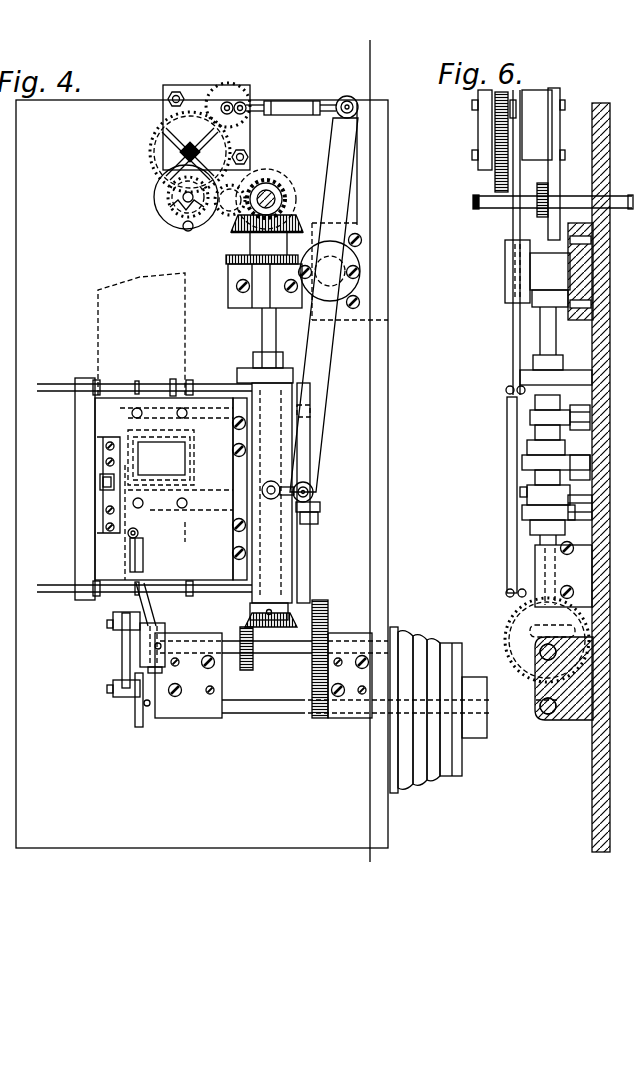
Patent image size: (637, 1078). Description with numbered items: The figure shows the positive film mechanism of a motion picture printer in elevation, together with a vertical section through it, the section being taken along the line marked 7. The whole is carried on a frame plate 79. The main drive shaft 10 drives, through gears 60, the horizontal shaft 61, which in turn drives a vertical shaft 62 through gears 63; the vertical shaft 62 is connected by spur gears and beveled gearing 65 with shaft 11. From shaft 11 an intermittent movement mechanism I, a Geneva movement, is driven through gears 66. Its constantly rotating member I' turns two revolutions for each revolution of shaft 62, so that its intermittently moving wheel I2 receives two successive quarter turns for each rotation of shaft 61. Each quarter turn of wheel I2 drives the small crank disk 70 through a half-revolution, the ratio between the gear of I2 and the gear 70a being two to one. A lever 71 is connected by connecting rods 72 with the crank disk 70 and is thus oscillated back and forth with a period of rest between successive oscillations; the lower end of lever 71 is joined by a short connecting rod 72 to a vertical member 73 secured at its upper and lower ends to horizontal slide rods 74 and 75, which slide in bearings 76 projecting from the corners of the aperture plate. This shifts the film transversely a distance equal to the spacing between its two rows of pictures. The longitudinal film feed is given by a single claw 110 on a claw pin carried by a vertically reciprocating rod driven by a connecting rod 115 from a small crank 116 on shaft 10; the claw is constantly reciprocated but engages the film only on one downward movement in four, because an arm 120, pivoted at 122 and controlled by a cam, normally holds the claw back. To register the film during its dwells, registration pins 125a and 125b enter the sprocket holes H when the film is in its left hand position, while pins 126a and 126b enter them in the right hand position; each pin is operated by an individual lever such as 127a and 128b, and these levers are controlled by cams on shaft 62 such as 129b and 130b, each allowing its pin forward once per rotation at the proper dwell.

In FIG. 4, the section line 7- 7 is at (348, 88).
In FIG. 4, the main drive shaft 10 is at (288, 716).
In FIG. 6, the main drive shaft 10 is at (540, 710).
In FIG. 4, the shaft 11 is at (272, 194).
In FIG. 6, the shaft 11 is at (474, 203).
In FIG. 4, the gears 60 is at (328, 620).
In FIG. 4, the horizontal shaft 61 is at (290, 656).
In FIG. 6, the horizontal shaft 61 is at (540, 654).
In FIG. 4, the vertical shaft 62 is at (262, 329).
In FIG. 4, the gears 63 is at (246, 628).
In FIG. 6, the gears 63 is at (528, 620).
In FIG. 4, the beveled gearing 65 is at (292, 196).
In FIG. 4, the gears 66 is at (248, 188).
In FIG. 6, the gears 66 is at (548, 200).
In FIG. 4, the crank disk 70 is at (250, 90).
In FIG. 6, the crank disk 70 is at (495, 108).
In FIG. 4, the gear 70a is at (240, 86).
In FIG. 4, the lever 71 is at (339, 305).
In FIG. 6, the lever 71 is at (513, 233).
In FIG. 4, the connecting rods 72 is at (296, 104).
In FIG. 4, the vertical member 73 is at (283, 564).
In FIG. 4, the horizontal slide rod 74 is at (208, 384).
In FIG. 4, the horizontal slide rod 75 is at (210, 594).
In FIG. 4, the bearings 76 is at (248, 370).
In FIG. 4, the frame plate 79 is at (202, 474).
In FIG. 4, the claw 110 is at (140, 533).
In FIG. 4, the connecting rod 115 is at (122, 658).
In FIG. 4, the crank 116 is at (135, 720).
In FIG. 4, the arm 120 is at (154, 608).
In FIG. 4, the pivot 122 is at (150, 480).
In FIG. 4, the registration pin 125a is at (120, 415).
In FIG. 4, the registration pin 125b is at (150, 512).
In FIG. 4, the registration pin 126a is at (173, 380).
In FIG. 4, the registration pin 126b is at (200, 504).
In FIG. 4, the lever 127a is at (167, 408).
In FIG. 4, the lever 128b is at (203, 537).
In FIG. 4, the cam 129b is at (300, 500).
In FIG. 4, the cam 130b is at (320, 512).
In FIG. 4, the sprocket holes H is at (158, 272).
In FIG. 4, the intermittent movement mechanism I is at (172, 193).
In FIG. 6, the intermittent movement mechanism I is at (483, 142).
In FIG. 4, the constantly rotating member I' is at (168, 198).
In FIG. 4, the intermittently moving wheel I2 is at (158, 140).
In FIG. 6, the intermittently moving wheel I2 is at (500, 138).